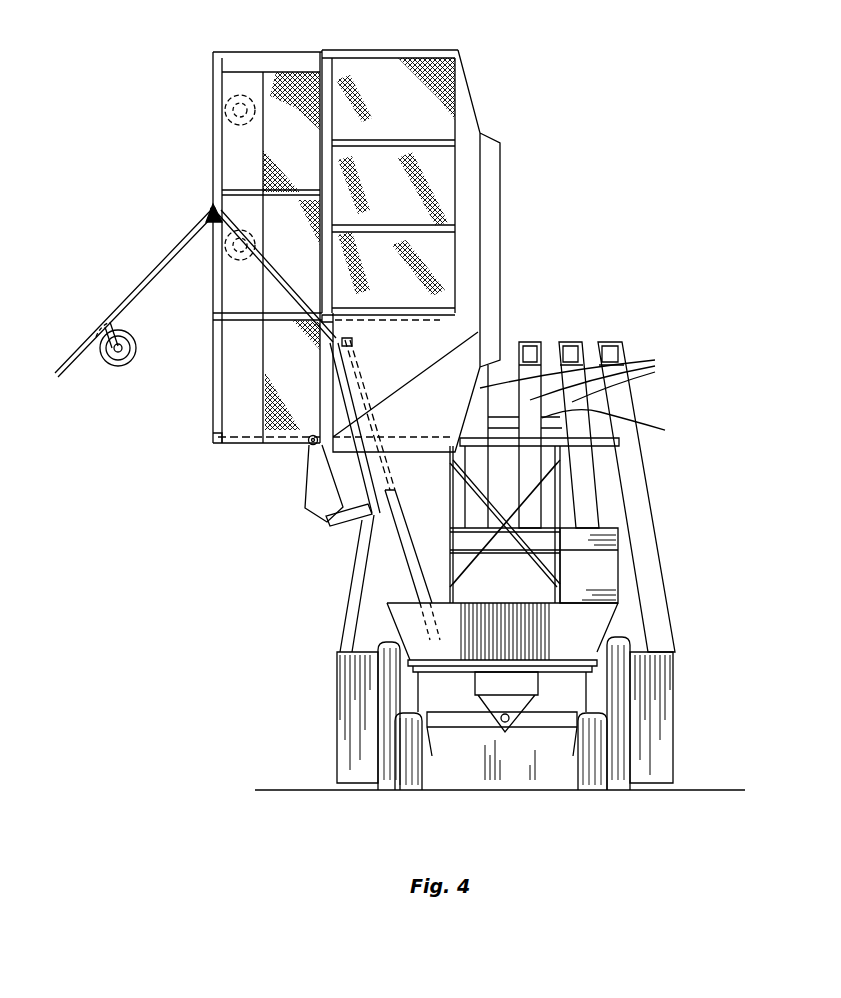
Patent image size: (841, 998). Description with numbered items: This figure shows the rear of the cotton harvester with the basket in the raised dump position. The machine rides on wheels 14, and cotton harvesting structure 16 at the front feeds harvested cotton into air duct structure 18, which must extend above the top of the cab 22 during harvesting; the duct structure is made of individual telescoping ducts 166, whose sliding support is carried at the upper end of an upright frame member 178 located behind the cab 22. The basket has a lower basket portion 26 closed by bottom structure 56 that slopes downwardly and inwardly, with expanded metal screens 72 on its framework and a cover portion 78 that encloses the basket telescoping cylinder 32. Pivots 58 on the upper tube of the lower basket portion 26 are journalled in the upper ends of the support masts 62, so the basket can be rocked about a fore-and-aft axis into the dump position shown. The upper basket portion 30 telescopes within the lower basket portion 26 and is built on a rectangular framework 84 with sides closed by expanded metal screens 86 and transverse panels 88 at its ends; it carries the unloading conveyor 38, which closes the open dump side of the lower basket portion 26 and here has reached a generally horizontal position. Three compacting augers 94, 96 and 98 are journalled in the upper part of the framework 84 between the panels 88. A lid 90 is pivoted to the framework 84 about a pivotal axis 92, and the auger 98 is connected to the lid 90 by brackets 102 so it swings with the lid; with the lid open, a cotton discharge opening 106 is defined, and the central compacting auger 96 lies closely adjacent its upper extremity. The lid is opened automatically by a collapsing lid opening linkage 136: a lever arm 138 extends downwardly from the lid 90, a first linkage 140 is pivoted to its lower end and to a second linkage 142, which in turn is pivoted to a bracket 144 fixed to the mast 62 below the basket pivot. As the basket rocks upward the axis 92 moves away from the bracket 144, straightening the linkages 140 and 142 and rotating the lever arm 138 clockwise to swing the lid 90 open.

The wheels 14 is at (400, 782).
The cotton harvesting structure 16 is at (325, 696).
The air duct structure 18 is at (648, 330).
The cab 22 is at (584, 402).
The lower basket portion 26 is at (443, 50).
The upper basket portion 30 is at (250, 52).
The hydraulic basket telescoping cylinders 32 is at (398, 310).
The unloading conveyor 38 is at (232, 455).
The bottom structure 56 is at (485, 130).
The pivots 58 is at (310, 446).
The support masts 62 is at (352, 550).
The expanded metal screens 72 is at (443, 172).
The cover portion 78 is at (465, 320).
The framework 84 is at (222, 52).
The expanded metal screens 86 is at (290, 90).
The transverse panels 88 is at (232, 162).
The lid 90 is at (132, 297).
The pivotal axis 92 is at (208, 214).
The compacting auger 94 is at (225, 110).
The central compacting auger 96 is at (226, 262).
The compacting auger 98 is at (122, 365).
The brackets 102 is at (98, 340).
The cotton discharge opening 106 is at (165, 432).
The collapsing lid opening linkage 136 is at (358, 392).
The lever arm 138 is at (212, 207).
The first linkage 140 is at (282, 278).
The second linkage 142 is at (305, 492).
The bracket 144 is at (335, 530).
The telescoping ducts 166 is at (605, 352).
The upright frame member 178 is at (560, 570).